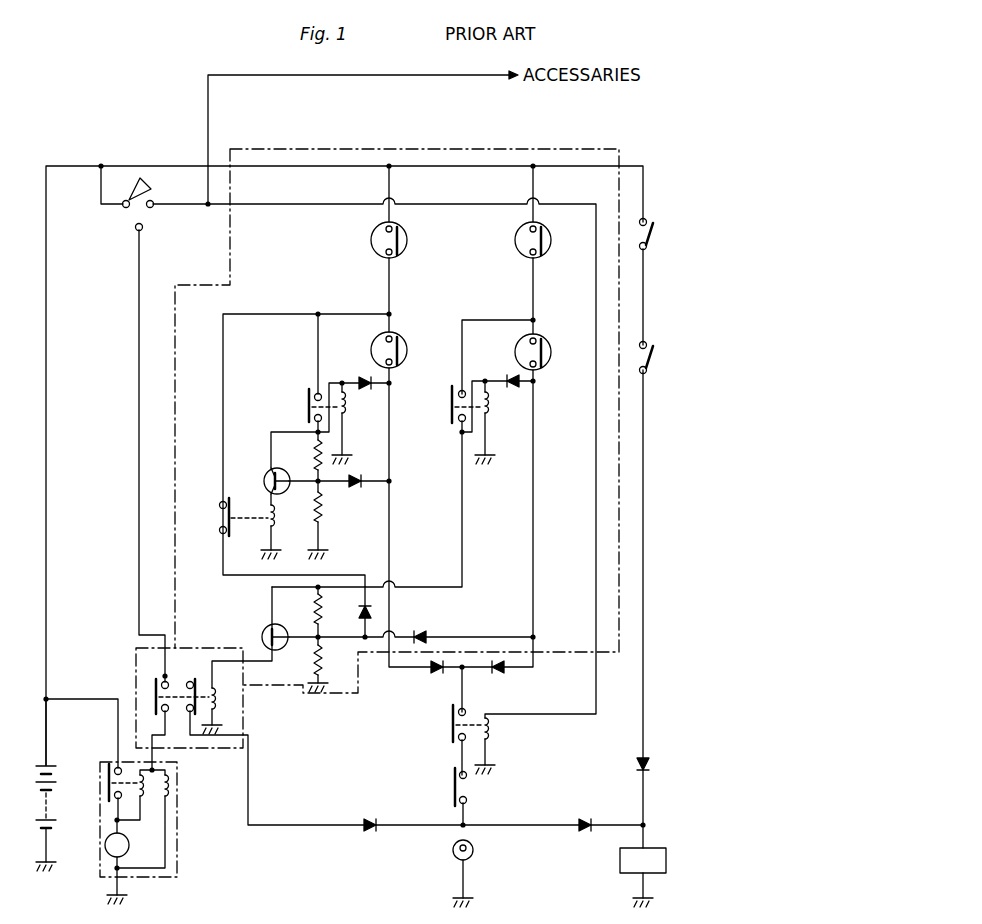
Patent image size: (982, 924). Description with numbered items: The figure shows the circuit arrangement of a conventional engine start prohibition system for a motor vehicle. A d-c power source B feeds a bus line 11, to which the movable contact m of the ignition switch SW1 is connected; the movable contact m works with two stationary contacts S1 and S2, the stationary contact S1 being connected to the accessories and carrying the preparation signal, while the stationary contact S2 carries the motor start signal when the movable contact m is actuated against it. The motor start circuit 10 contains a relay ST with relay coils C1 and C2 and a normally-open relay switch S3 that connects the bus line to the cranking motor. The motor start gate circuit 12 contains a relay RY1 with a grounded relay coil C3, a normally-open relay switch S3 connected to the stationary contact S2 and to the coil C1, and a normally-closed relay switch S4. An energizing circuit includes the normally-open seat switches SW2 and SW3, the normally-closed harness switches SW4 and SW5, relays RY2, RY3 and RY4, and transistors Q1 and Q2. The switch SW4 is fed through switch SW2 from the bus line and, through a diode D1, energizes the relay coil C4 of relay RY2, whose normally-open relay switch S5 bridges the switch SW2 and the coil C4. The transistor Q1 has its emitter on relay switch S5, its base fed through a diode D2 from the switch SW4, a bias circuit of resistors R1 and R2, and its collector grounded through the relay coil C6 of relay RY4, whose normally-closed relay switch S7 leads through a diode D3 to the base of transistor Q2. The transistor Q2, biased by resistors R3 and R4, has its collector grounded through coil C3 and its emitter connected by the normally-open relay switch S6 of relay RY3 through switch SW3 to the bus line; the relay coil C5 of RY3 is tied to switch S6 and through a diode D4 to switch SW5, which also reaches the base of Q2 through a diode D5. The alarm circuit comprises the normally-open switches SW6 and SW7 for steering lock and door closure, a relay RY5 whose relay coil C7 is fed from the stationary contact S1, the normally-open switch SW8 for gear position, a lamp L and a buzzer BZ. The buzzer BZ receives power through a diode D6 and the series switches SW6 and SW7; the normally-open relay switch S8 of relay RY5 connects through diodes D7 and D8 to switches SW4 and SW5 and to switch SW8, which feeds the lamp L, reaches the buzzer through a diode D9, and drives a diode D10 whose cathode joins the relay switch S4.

The motor start circuit 10 is at (177, 830).
The bus line 11 is at (474, 168).
The motor start gate circuit 12 is at (244, 706).
The movable contact m is at (127, 191).
The ignition switch SW1 is at (127, 221).
The stationary contact S1 is at (161, 217).
The stationary contact S2 is at (149, 236).
The normally-open switch SW2 is at (404, 258).
The normally-open switch SW3 is at (548, 258).
The normally-closed switch SW4 is at (404, 345).
The normally-closed switch SW5 is at (558, 338).
The normally-open switch SW6 is at (640, 237).
The normally-open switch SW7 is at (640, 360).
The normally-open switch SW8 is at (468, 789).
The relay RY1 is at (189, 698).
The relay RY2 is at (335, 371).
The relay RY3 is at (477, 373).
The relay RY4 is at (223, 540).
The relay RY5 is at (438, 744).
The normally-open relay switch S3 is at (152, 688).
The normally-closed relay switch S4 is at (196, 716).
The normally-open relay switch S5 is at (306, 404).
The normally-open relay switch S6 is at (449, 410).
The normally-closed relay switch S7 is at (219, 518).
The normally-open relay switch S8 is at (450, 726).
The transistor Q1 is at (266, 474).
The transistor Q2 is at (266, 627).
The resistor R1 is at (307, 455).
The resistor R2 is at (324, 510).
The resistor R3 is at (314, 612).
The resistor R4 is at (323, 662).
The relay coil C1 is at (146, 786).
The relay coil C2 is at (170, 786).
The relay coil C3 is at (217, 714).
The relay coil C4 is at (347, 406).
The relay coil C5 is at (490, 410).
The relay coil C6 is at (277, 523).
The relay coil C7 is at (490, 732).
The diode D1 is at (366, 389).
The diode D2 is at (356, 488).
The diode D3 is at (360, 615).
The diode D4 is at (520, 396).
The diode D5 is at (422, 631).
The diode D6 is at (636, 763).
The diode D7 is at (436, 674).
The diode D8 is at (500, 674).
The diode D9 is at (585, 833).
The diode D10 is at (371, 833).
The d-c power source B is at (54, 796).
The relay ST is at (132, 845).
The lamp L is at (474, 852).
The buzzer BZ is at (643, 860).